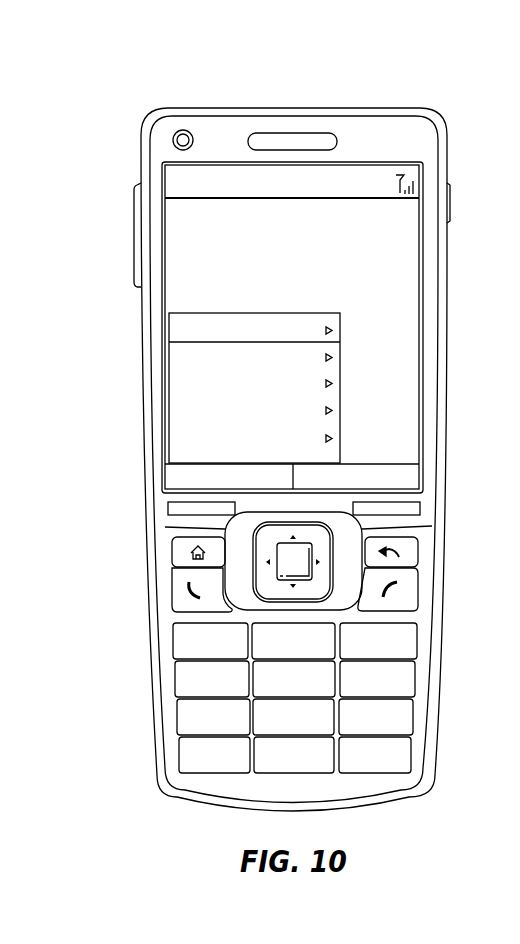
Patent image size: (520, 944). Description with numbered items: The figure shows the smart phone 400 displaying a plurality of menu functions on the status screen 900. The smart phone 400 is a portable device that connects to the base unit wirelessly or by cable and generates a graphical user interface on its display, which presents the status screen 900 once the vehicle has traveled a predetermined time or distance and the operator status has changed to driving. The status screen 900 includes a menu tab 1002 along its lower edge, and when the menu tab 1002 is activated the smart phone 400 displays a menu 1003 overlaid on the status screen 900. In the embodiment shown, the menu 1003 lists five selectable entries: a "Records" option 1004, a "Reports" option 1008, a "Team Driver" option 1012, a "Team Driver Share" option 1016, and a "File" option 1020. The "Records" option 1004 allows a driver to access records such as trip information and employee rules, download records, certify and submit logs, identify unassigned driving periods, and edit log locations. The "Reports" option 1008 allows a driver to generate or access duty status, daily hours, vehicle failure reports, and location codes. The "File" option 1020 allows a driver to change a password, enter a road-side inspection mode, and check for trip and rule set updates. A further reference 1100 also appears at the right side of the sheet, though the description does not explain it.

The smart phone 400 is at (373, 85).
The status screen 900 is at (395, 252).
The menu tab 1002 is at (200, 482).
The menu 1003 is at (182, 373).
The "Records" option 1004 is at (342, 338).
The "Reports" option 1008 is at (342, 365).
The "Team Driver" option 1012 is at (342, 392).
The "Team Driver Share" option 1016 is at (342, 418).
The "File" option 1020 is at (342, 445).
The keypad 1100 is at (506, 546).